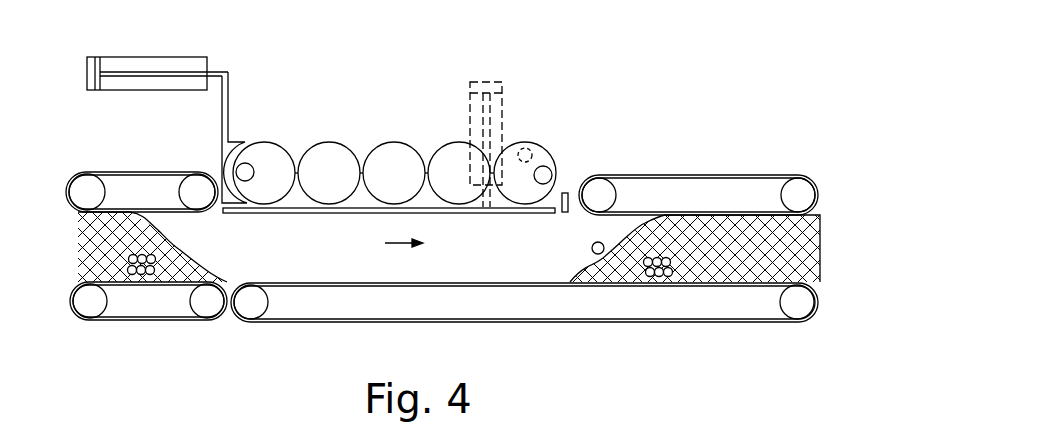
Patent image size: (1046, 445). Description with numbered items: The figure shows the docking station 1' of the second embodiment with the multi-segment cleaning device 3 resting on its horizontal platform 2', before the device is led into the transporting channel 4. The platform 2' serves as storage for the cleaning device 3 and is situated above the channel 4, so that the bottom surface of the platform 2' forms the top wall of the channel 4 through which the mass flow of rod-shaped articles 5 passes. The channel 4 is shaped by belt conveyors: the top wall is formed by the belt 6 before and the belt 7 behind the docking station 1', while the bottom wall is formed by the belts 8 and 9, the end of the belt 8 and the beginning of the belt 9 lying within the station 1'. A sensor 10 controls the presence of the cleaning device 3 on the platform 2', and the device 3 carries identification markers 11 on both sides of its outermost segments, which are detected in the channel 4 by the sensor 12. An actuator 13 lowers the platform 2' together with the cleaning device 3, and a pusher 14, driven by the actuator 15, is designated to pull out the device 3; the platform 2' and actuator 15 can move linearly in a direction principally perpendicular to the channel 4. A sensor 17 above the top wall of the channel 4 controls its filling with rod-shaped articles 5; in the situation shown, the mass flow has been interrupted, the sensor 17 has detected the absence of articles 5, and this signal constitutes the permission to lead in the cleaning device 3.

The docking station 1' is at (635, 102).
The horizontal platform 2' is at (389, 285).
The multi-segment cleaning device 3 is at (332, 153).
The transporting channel 4 is at (340, 248).
The rod-shaped articles 5 is at (648, 282).
The belt 6 is at (85, 172).
The belt 7 is at (732, 175).
The belt 8 is at (203, 318).
The belt 9 is at (693, 323).
The sensor 10 is at (523, 152).
The identification markers 11 is at (252, 167).
The sensor 12 is at (593, 253).
The actuator 13 is at (475, 113).
The pusher 14 is at (232, 150).
The actuator 15 is at (118, 62).
The sensor 17 is at (570, 198).